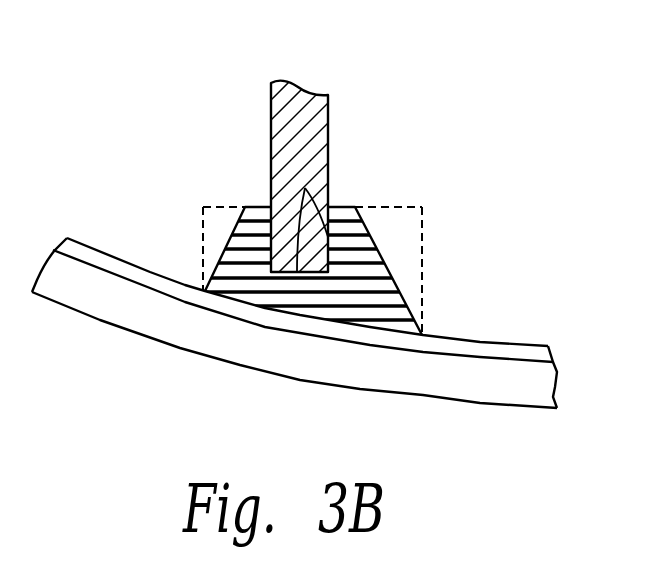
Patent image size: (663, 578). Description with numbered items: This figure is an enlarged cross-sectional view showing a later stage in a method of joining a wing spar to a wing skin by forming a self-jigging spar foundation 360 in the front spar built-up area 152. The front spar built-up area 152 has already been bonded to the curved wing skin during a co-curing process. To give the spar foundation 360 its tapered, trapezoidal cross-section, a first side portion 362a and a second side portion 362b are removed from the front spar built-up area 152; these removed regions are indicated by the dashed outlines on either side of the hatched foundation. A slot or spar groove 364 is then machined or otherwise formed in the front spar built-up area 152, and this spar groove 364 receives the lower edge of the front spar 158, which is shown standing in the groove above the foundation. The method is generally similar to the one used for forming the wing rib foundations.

The front spar built-up area 152 is at (256, 207).
The front spar 158 is at (320, 125).
The spar foundation 360 is at (363, 222).
The first side portion 362a is at (203, 215).
The second side portion 362b is at (422, 268).
The spar groove 364 is at (305, 188).